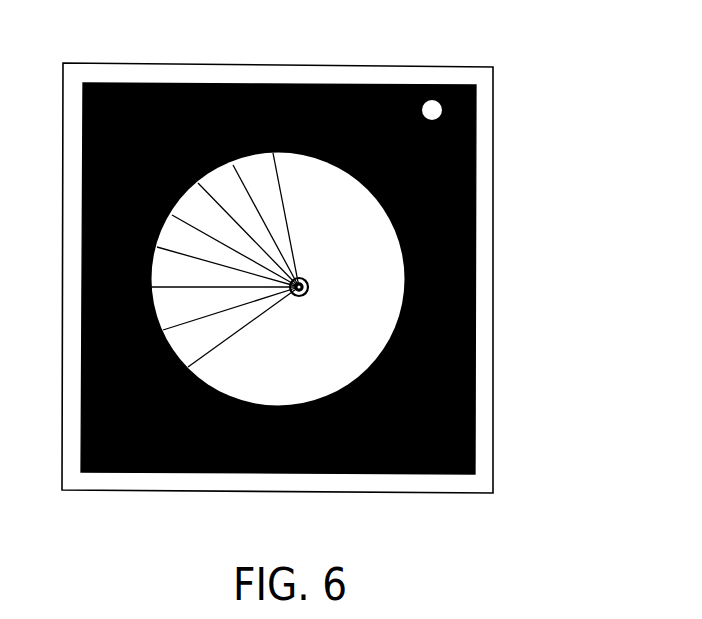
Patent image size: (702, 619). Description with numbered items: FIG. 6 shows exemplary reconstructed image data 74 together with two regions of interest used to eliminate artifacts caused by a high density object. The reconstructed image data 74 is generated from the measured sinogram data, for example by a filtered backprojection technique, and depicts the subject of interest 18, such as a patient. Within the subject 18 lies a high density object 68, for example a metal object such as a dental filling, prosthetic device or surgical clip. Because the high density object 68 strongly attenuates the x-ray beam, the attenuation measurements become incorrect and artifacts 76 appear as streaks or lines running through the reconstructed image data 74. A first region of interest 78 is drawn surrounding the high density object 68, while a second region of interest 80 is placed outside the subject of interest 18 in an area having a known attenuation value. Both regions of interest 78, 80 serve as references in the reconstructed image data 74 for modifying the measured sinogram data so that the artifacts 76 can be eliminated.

The subject of interest 18 is at (278, 209).
The high density object 68 is at (325, 307).
The reconstructed image data 74 is at (475, 258).
The artifacts 76 is at (292, 246).
The region of interest 78 is at (306, 279).
The region of interest outside the subject 80 is at (436, 92).